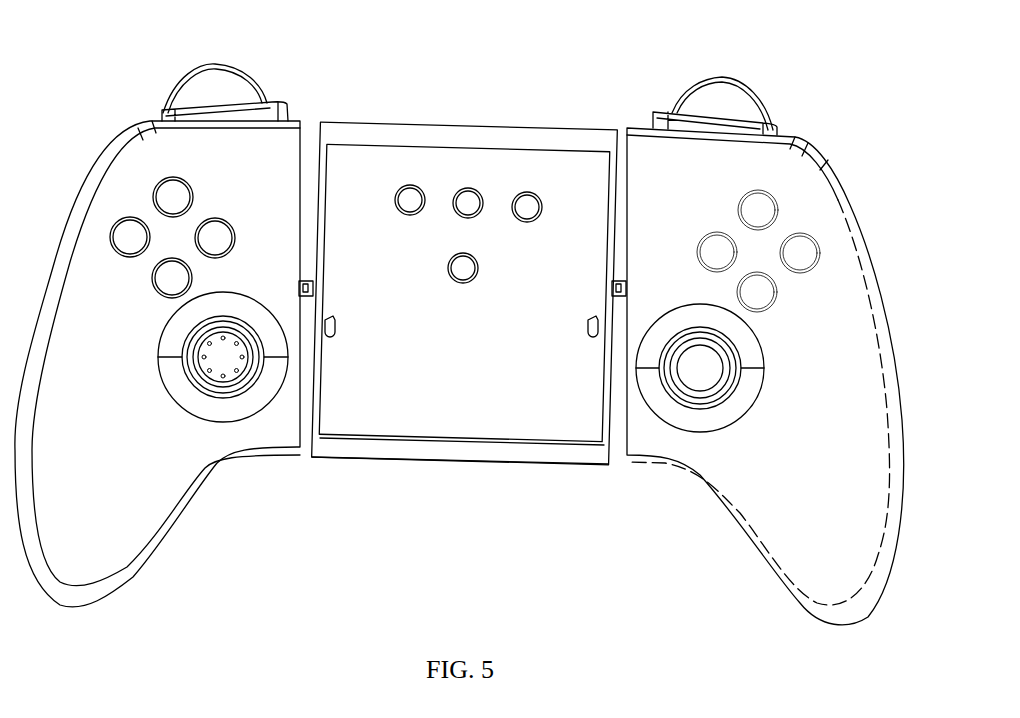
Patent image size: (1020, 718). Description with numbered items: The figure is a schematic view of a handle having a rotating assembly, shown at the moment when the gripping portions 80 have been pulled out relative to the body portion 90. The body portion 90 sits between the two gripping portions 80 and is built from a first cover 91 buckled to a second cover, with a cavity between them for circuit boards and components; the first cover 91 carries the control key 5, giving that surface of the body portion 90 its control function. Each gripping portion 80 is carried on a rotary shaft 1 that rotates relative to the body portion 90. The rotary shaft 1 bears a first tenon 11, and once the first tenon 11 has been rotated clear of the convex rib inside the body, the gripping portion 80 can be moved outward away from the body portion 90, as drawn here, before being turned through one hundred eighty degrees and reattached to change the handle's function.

The gripping portion 80 is at (277, 140).
The body portion 90 is at (520, 117).
The first cover 91 is at (475, 450).
The control key 5 is at (410, 193).
The rotary shaft 1 is at (300, 282).
The first tenon 11 is at (630, 282).